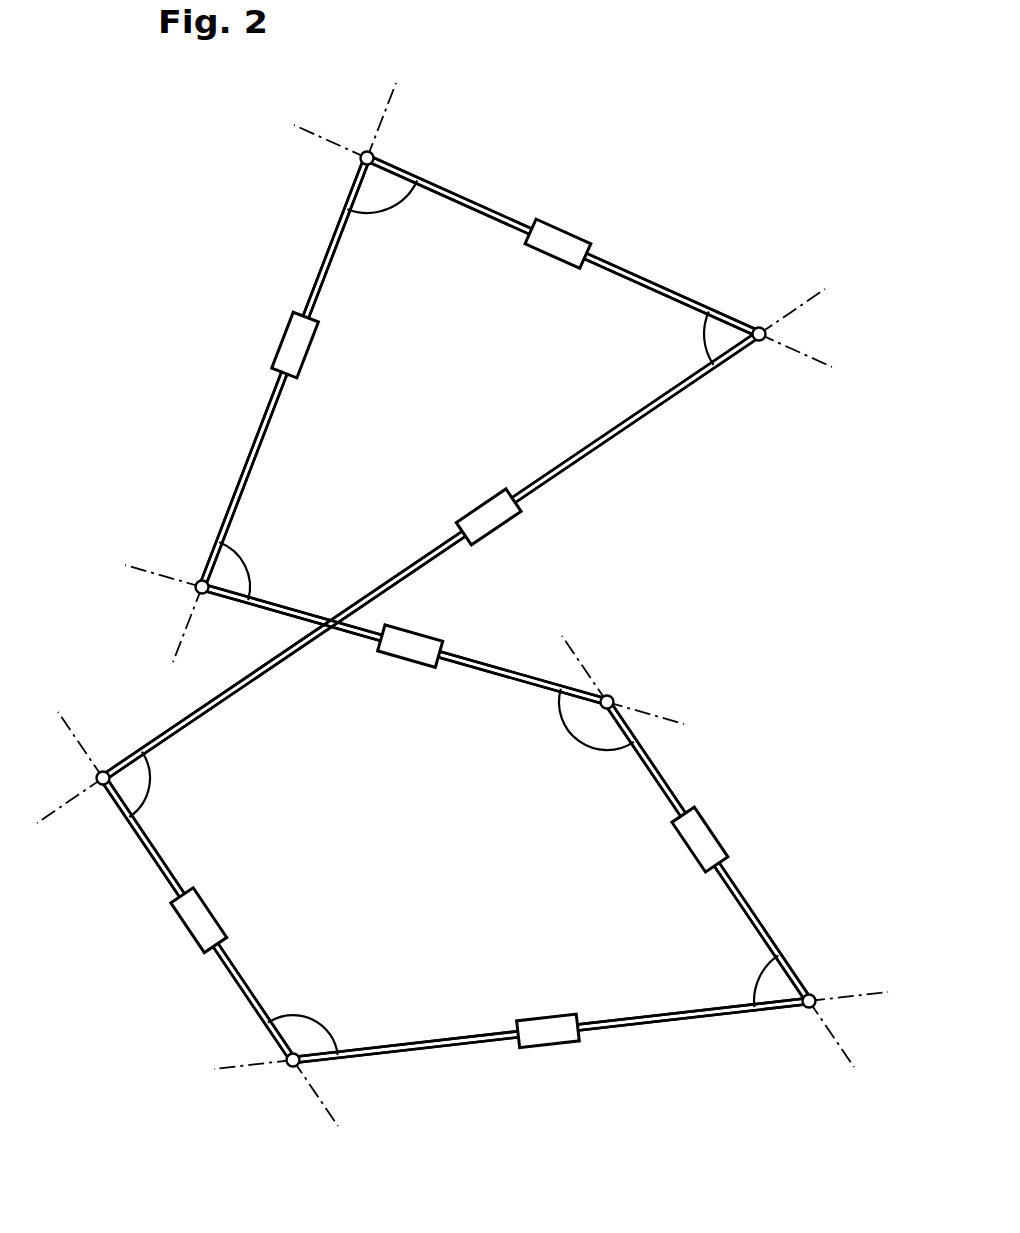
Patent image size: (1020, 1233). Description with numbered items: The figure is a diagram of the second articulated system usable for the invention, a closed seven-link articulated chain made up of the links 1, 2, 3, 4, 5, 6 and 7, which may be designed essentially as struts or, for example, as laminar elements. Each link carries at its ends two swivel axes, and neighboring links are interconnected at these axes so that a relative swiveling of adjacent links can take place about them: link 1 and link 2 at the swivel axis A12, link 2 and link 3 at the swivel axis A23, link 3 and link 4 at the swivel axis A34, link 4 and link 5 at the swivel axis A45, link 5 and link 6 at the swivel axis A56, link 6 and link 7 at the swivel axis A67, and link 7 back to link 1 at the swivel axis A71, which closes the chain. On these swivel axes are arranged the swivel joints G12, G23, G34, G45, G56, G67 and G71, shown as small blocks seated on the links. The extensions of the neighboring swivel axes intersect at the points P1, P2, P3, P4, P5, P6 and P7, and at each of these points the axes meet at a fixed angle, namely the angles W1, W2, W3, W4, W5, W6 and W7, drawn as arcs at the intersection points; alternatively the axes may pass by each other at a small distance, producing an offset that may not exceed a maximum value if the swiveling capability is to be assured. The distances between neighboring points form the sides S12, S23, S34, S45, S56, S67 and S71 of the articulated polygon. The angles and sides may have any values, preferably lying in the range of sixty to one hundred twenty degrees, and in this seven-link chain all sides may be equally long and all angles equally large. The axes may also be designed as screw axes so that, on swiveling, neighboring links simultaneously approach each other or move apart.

The link 1 is at (329, 250).
The link 2 is at (667, 288).
The link 3 is at (180, 722).
The link 4 is at (240, 990).
The link 5 is at (686, 1018).
The link 6 is at (657, 771).
The link 7 is at (284, 614).
The intersection point P1 is at (373, 154).
The intersection point P2 is at (762, 343).
The intersection point P3 is at (97, 778).
The intersection point P4 is at (290, 1066).
The intersection point P5 is at (816, 1006).
The intersection point P6 is at (614, 697).
The intersection point P7 is at (196, 592).
The side S12 is at (463, 196).
The side S23 is at (600, 447).
The side S34 is at (163, 872).
The side S45 is at (425, 1048).
The side S56 is at (742, 892).
The side S67 is at (481, 660).
The side S71 is at (248, 464).
The swivel joint G12 is at (560, 242).
The swivel joint G23 is at (505, 522).
The swivel joint G34 is at (188, 935).
The swivel joint G45 is at (555, 1033).
The swivel joint G56 is at (720, 832).
The swivel joint G67 is at (422, 638).
The swivel joint G71 is at (290, 352).
The angle W1 is at (382, 206).
The angle W2 is at (706, 344).
The angle W3 is at (143, 793).
The angle W4 is at (305, 1020).
The angle W5 is at (764, 984).
The angle W6 is at (577, 738).
The angle W7 is at (240, 573).
The swivel axis A12 is at (306, 132).
The swivel axis A23 is at (819, 302).
The swivel axis A34 is at (70, 746).
The swivel axis A45 is at (222, 1066).
The swivel axis A56 is at (843, 1055).
The swivel axis A67 is at (681, 712).
The swivel axis A71 is at (168, 640).